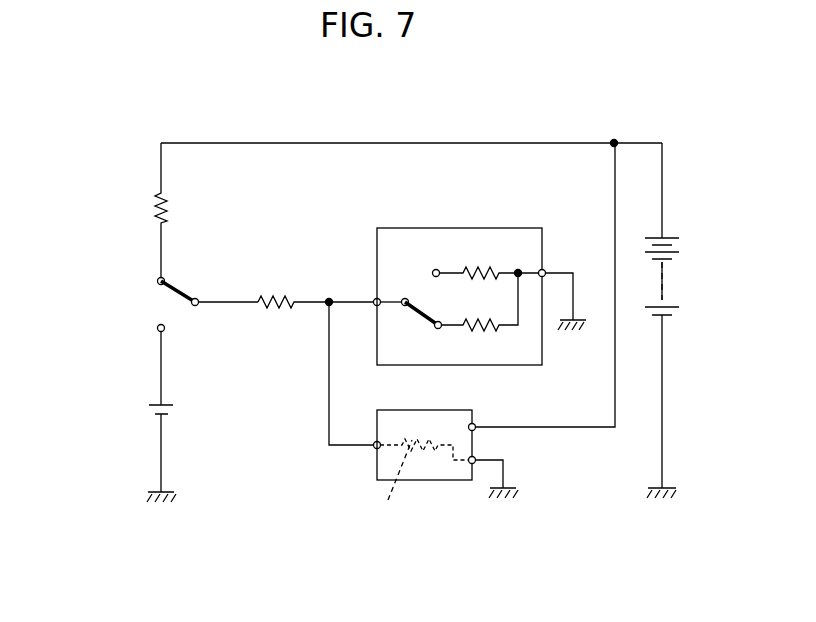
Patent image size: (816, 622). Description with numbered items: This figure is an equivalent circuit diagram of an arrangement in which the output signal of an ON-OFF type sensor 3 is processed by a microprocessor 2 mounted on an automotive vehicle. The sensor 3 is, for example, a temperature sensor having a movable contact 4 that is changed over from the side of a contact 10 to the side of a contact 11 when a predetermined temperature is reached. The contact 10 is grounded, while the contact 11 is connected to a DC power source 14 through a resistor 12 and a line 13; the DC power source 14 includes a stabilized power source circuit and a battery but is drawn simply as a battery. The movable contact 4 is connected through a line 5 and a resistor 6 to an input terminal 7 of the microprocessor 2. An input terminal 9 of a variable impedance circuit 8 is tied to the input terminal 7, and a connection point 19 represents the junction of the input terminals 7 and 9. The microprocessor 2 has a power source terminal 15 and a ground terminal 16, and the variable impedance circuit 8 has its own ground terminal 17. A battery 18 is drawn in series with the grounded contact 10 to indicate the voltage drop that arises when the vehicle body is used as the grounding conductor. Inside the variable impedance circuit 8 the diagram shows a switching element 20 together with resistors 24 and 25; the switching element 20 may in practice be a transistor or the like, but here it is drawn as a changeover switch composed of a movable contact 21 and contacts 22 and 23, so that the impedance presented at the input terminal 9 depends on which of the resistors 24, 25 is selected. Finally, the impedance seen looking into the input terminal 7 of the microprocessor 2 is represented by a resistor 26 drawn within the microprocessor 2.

The microprocessor 2 is at (427, 482).
The ON-OFF type sensor 3 is at (193, 292).
The movable contact 4 is at (196, 306).
The line 5 is at (234, 304).
The resistor 6 is at (275, 300).
The input terminal 7 is at (374, 448).
The variable impedance circuit 8 is at (419, 228).
The input terminal 9 is at (375, 306).
The contact 10 is at (158, 329).
The contact 11 is at (160, 281).
The resistor 12 is at (161, 210).
The line 13 is at (253, 143).
The DC power source 14 is at (665, 237).
The power source terminal 15 is at (476, 425).
The ground terminal 16 is at (477, 459).
The ground terminal 17 is at (546, 272).
The battery 18 is at (176, 407).
The connection point 19 is at (326, 306).
The switching element 20 is at (431, 302).
The movable contact 21 is at (404, 306).
The contact 22 is at (433, 271).
The contact 23 is at (438, 329).
The resistor 24 is at (480, 272).
The resistor 25 is at (488, 328).
The resistor 26 is at (411, 474).